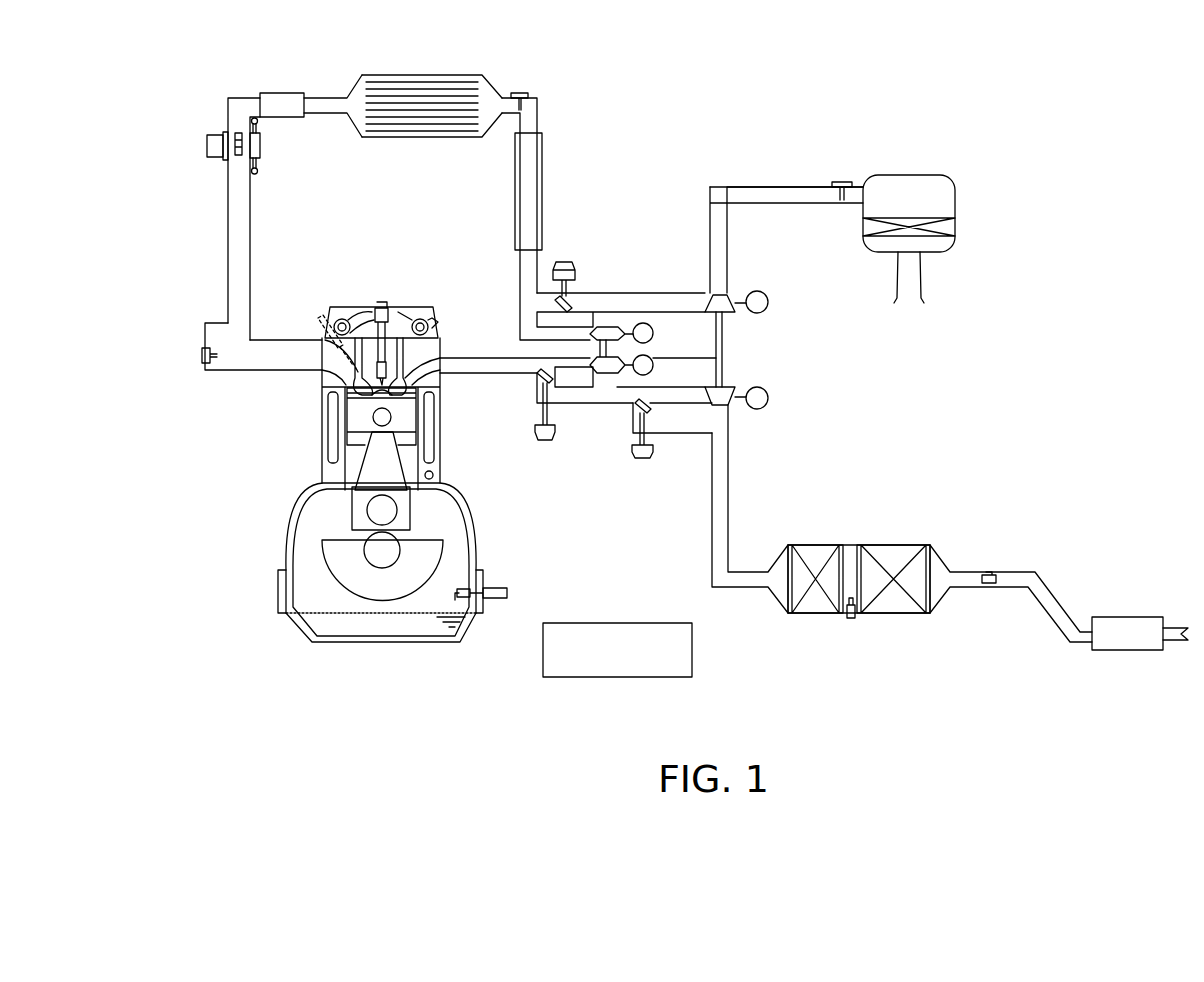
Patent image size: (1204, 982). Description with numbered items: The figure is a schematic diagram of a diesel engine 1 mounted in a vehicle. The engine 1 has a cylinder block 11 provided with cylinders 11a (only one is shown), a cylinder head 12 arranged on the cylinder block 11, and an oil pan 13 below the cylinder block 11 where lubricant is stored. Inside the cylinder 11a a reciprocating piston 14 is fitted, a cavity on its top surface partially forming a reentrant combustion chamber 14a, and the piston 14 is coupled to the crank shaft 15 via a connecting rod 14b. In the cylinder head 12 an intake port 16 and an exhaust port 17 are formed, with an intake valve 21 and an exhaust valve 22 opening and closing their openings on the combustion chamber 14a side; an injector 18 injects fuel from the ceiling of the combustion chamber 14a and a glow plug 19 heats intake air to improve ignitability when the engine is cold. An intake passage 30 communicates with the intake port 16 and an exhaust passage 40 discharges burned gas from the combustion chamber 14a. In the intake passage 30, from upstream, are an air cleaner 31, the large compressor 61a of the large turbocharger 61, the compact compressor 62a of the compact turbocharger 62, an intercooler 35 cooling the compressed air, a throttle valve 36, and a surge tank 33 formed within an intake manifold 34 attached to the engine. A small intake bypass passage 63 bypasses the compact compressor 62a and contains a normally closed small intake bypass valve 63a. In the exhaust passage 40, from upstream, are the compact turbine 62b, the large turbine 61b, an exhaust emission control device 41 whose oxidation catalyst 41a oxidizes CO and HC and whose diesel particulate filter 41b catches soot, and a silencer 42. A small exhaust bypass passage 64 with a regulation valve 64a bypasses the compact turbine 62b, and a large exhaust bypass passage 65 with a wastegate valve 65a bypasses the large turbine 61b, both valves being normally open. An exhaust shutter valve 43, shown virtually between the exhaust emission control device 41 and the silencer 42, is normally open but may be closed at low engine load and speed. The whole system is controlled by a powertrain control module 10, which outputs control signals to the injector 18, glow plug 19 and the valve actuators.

The engine 1 is at (230, 626).
The powertrain control module 10 is at (574, 687).
The cylinder block 11 is at (440, 432).
The cylinder 11a is at (434, 466).
The cylinder head 12 is at (442, 335).
The oil pan 13 is at (392, 643).
The piston 14 is at (343, 450).
The combustion chamber 14a is at (395, 402).
The connecting rod 14b is at (345, 470).
The crank shaft 15 is at (372, 570).
The intake port 16 is at (330, 353).
The exhaust port 17 is at (425, 364).
The injector 18 is at (380, 302).
The glow plug 19 is at (330, 320).
The intake valve 21 is at (350, 396).
The exhaust valve 22 is at (425, 387).
The intake passage 30 is at (231, 270).
The air cleaner 31 is at (922, 173).
The surge tank 33 is at (228, 372).
The intake manifold 34 is at (272, 372).
The intercooler 35 is at (418, 73).
The throttle valve 36 is at (236, 125).
The exhaust passage 40 is at (710, 528).
The exhaust emission control device 41 is at (915, 494).
The oxidation catalyst 41a is at (823, 553).
The diesel particulate filter 41b is at (895, 553).
The silencer 42 is at (1133, 615).
The exhaust shutter valve 43 is at (993, 573).
The large turbocharger 61 is at (837, 313).
The large compressor 61a is at (730, 303).
The large turbine 61b is at (730, 392).
The compact turbocharger 62 is at (720, 156).
The compact compressor 62a is at (625, 330).
The compact turbine 62b is at (650, 362).
The small intake bypass passage 63 is at (600, 318).
The small intake bypass valve 63a is at (570, 300).
The small exhaust bypass passage 64 is at (573, 395).
The regulation valve 64a is at (532, 382).
The large exhaust bypass passage 65 is at (672, 433).
The wastegate valve 65a is at (632, 410).